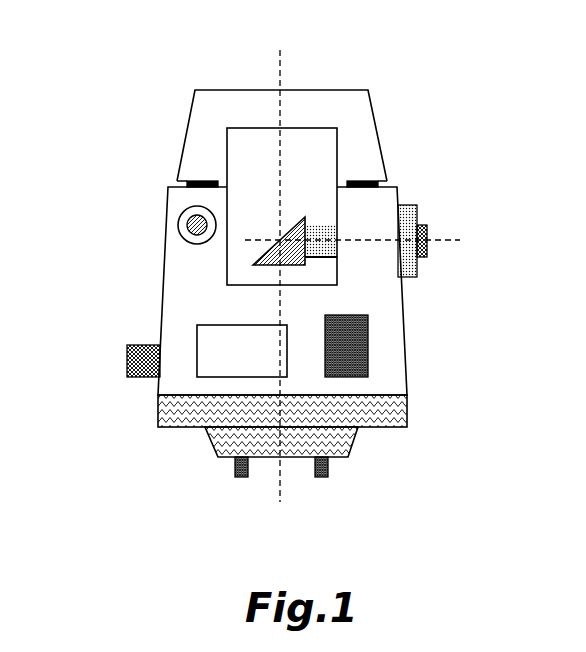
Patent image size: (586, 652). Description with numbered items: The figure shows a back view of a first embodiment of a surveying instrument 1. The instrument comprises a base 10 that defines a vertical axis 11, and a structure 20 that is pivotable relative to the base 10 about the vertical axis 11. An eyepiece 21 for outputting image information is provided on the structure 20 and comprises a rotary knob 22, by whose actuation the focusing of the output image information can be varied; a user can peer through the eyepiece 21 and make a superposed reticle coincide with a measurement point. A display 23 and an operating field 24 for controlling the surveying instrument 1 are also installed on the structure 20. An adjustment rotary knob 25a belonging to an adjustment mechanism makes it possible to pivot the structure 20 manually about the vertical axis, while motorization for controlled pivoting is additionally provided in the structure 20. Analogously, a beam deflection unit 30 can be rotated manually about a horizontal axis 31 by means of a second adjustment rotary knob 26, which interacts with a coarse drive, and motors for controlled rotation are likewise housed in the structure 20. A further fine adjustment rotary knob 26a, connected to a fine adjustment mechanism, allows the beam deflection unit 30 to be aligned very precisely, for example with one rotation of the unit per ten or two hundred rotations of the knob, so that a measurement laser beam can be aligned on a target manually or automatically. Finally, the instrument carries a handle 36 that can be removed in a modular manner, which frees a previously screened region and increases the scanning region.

The surveying instrument 1 is at (197, 61).
The base 10 is at (202, 417).
The vertical axis 11 is at (282, 472).
The structure 20 is at (172, 268).
The eyepiece 21 is at (193, 220).
The rotary knob 22 is at (180, 227).
The display 23 is at (210, 342).
The operating field 24 is at (355, 355).
The adjustment rotary knob 25a is at (132, 375).
The second adjustment rotary knob 26 is at (408, 205).
The fine adjustment rotary knob 26a is at (430, 222).
The beam deflection unit 30 is at (300, 218).
The horizontal axis 31 is at (432, 238).
The handle 36 is at (365, 117).